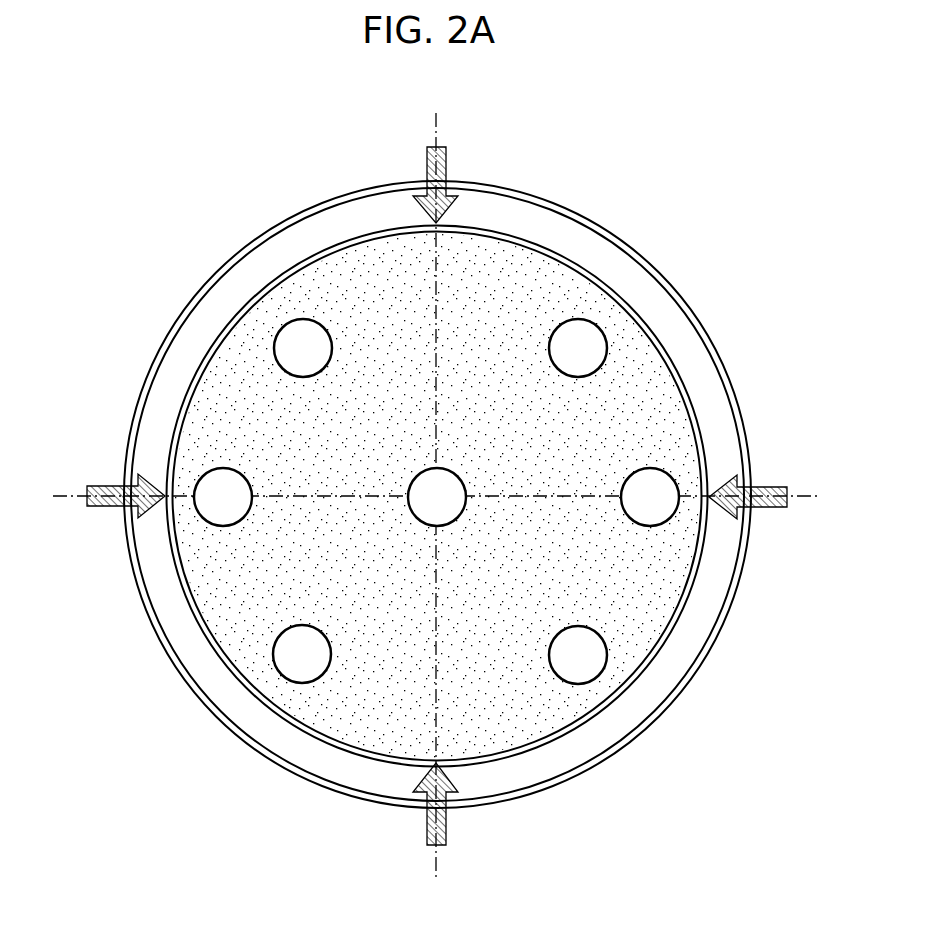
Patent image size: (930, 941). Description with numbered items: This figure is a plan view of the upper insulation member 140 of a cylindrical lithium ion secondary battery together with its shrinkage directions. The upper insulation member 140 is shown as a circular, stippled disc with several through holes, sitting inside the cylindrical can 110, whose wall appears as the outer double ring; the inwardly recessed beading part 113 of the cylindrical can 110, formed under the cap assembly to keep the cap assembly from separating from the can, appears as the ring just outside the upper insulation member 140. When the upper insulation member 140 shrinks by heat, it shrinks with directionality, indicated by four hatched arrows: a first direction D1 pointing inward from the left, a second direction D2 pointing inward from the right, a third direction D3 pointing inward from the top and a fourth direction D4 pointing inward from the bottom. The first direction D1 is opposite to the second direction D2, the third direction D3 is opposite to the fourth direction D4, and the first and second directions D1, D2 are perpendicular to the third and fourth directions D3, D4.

The cylindrical can 110 is at (570, 208).
The beading part 113 is at (648, 290).
The upper insulation member 140 is at (638, 383).
The first direction D1 is at (89, 505).
The second direction D2 is at (787, 488).
The third direction D3 is at (427, 147).
The fourth direction D4 is at (447, 845).